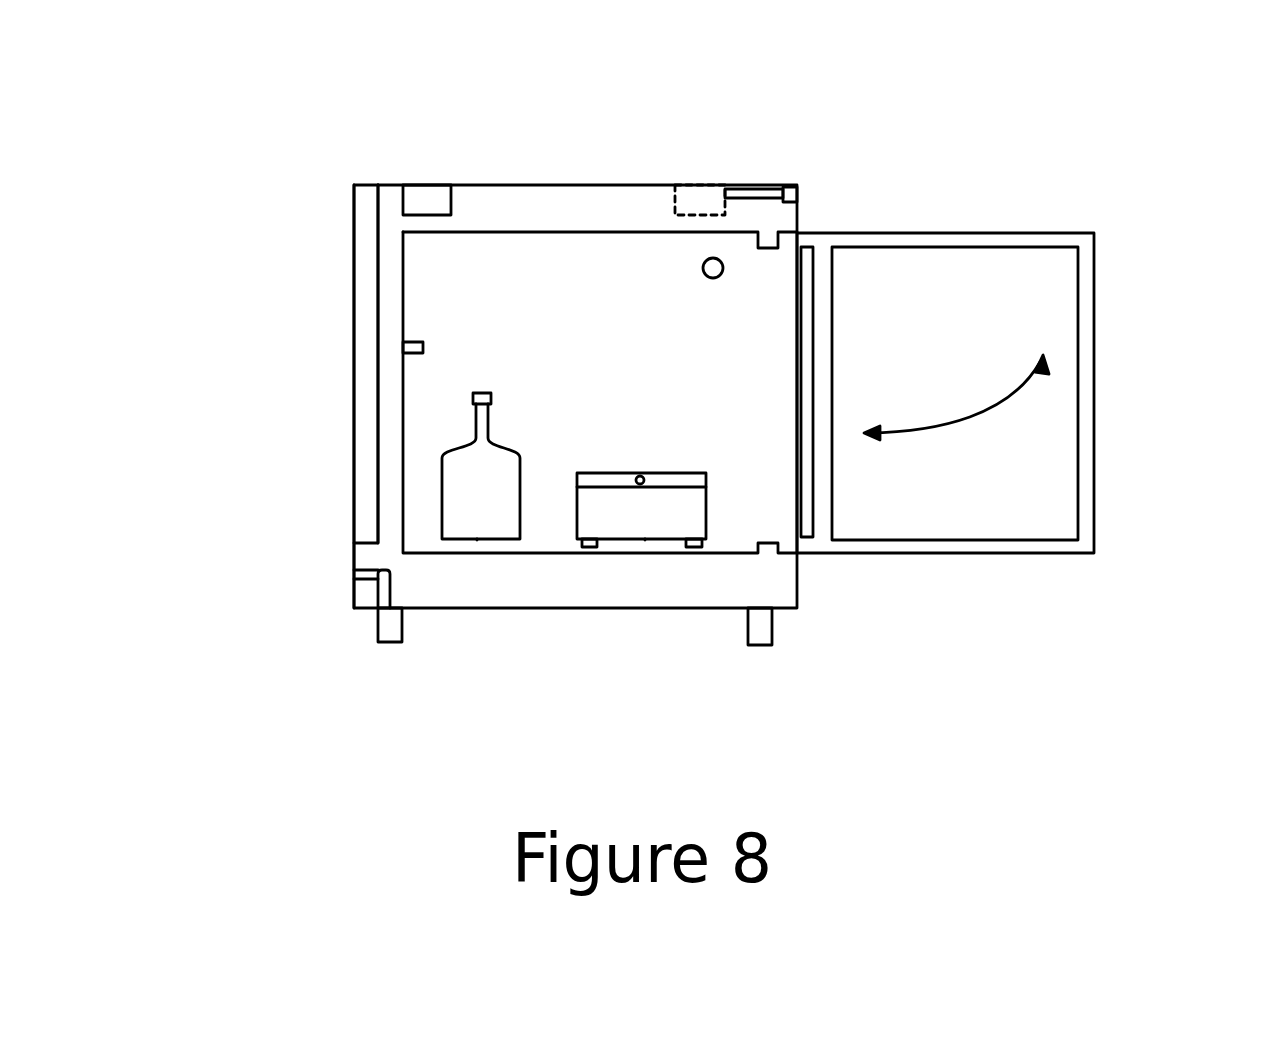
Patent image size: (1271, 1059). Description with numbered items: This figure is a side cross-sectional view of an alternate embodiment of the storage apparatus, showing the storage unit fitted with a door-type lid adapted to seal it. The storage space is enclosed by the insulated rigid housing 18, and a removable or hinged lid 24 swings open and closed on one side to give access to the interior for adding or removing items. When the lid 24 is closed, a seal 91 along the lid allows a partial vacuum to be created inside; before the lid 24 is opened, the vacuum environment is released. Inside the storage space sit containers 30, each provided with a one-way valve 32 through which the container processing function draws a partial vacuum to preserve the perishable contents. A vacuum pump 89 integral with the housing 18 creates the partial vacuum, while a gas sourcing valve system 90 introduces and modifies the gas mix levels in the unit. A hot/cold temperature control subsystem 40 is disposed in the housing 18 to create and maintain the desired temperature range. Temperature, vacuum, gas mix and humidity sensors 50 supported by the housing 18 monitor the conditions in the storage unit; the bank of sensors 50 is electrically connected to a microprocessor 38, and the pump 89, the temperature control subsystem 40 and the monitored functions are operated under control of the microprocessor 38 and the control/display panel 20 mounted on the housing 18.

The insulated rigid housing 18 is at (355, 425).
The control/display panel 20 is at (793, 185).
The hinged lid 24 is at (1108, 272).
The container 30 is at (431, 185).
The one-way valve 32 is at (482, 393).
The microprocessor 38 is at (686, 185).
The hot/cold temperature control subsystem 40 is at (360, 288).
The sensors 50 is at (357, 335).
The vacuum pump 89 is at (365, 590).
The gas sourcing valve system 90 is at (713, 258).
The seal 91 is at (1081, 480).